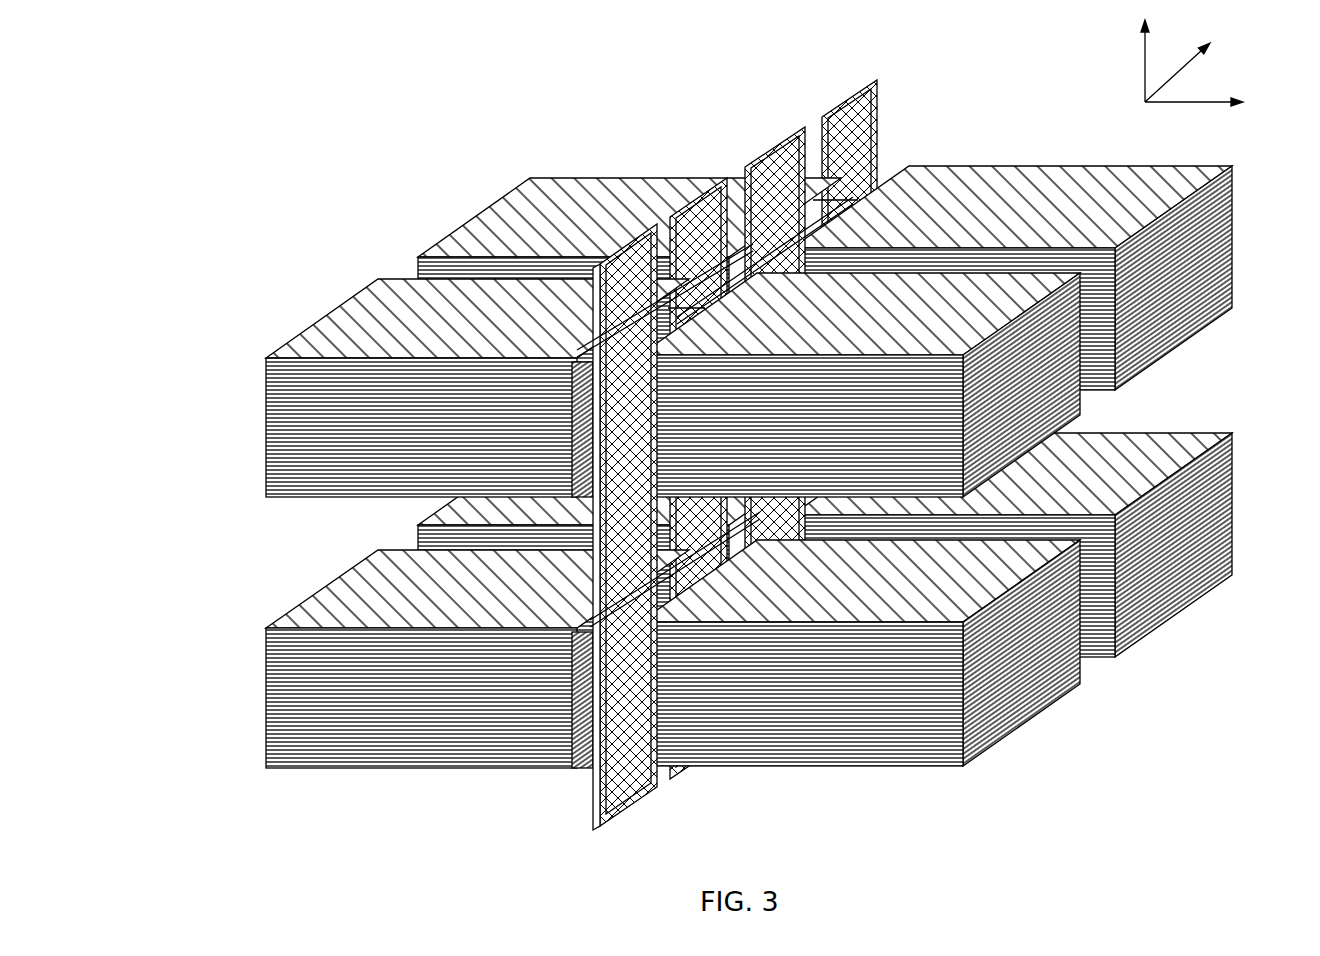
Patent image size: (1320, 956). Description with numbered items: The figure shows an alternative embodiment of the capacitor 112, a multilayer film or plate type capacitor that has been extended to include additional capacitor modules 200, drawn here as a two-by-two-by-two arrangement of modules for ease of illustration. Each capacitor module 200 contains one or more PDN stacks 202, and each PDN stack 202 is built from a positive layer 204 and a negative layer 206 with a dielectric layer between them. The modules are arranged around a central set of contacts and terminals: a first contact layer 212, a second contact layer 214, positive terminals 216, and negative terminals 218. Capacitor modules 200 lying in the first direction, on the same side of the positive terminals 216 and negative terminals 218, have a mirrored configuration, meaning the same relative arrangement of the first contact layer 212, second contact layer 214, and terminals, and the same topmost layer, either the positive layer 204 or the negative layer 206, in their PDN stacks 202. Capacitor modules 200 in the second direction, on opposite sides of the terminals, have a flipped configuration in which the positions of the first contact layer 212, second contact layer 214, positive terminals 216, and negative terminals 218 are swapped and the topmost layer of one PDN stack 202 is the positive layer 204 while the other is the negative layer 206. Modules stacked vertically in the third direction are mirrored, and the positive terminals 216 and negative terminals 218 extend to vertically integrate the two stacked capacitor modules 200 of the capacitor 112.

The capacitor 112 is at (368, 126).
The capacitor module 200 is at (395, 231).
The PDN stack 202 is at (246, 362).
The positive layer 204 is at (568, 206).
The negative layer 206 is at (1003, 193).
The first contact layer 212 is at (624, 735).
The second contact layer 214 is at (572, 748).
The positive terminal 216 is at (848, 100).
The negative terminal 218 is at (880, 96).